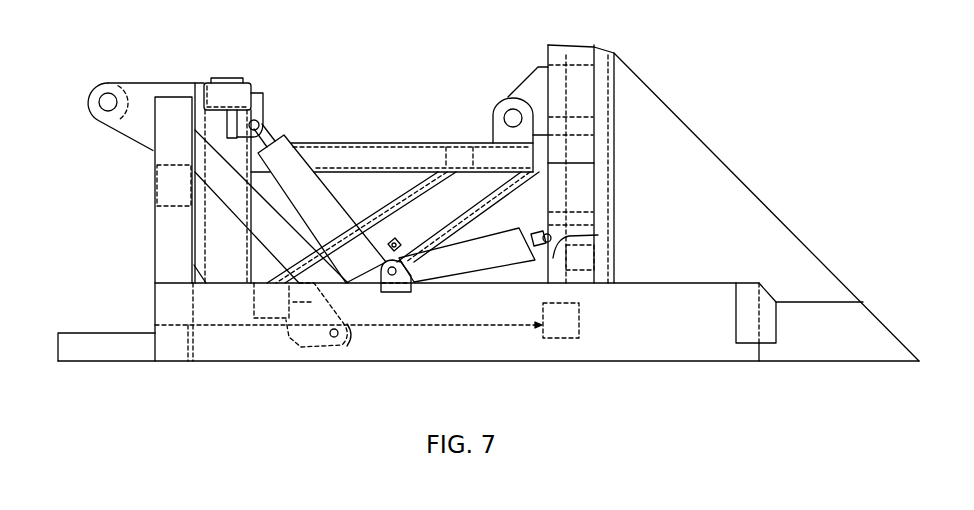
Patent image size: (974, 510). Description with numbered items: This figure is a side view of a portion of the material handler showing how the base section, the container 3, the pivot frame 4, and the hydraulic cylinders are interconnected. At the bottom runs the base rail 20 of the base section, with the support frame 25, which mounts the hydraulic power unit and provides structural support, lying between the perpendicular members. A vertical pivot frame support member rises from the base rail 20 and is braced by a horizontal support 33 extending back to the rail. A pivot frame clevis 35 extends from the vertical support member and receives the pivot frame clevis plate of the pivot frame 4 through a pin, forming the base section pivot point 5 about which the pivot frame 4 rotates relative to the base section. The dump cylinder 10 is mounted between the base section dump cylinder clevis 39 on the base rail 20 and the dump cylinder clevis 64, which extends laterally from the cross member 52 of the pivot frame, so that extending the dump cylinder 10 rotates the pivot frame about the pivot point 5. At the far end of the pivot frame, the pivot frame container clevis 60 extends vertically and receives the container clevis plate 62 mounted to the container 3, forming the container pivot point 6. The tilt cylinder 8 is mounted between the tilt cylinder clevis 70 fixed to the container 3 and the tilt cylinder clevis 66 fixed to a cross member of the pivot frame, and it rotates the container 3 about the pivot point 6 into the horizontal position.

The container 3 is at (682, 113).
The pivot frame 4 is at (388, 134).
The base section pivot point 5 is at (106, 101).
The container pivot point 6 is at (511, 115).
The tilt cylinder 8 is at (455, 277).
The dump cylinder 10 is at (362, 240).
The base rail 20 is at (623, 345).
The support frame 25 is at (368, 317).
The horizontal support 33 is at (232, 187).
The pivot frame clevis 35 is at (133, 138).
The base section dump cylinder clevis 39 is at (412, 292).
The cross member 52 is at (222, 98).
The pivot frame container clevis 60 is at (498, 130).
The container clevis plate 62 is at (547, 67).
The dump cylinder clevis 64 is at (262, 108).
The tilt cylinder clevis 66 is at (287, 338).
The tilt cylinder clevis 70 is at (597, 235).